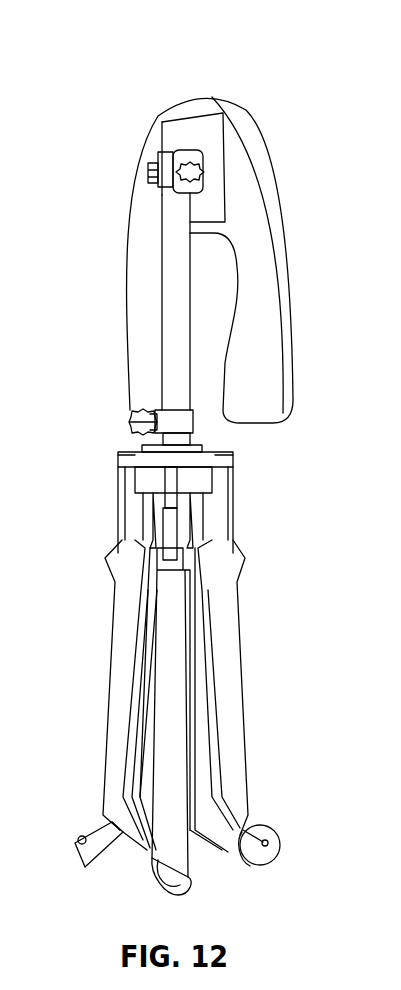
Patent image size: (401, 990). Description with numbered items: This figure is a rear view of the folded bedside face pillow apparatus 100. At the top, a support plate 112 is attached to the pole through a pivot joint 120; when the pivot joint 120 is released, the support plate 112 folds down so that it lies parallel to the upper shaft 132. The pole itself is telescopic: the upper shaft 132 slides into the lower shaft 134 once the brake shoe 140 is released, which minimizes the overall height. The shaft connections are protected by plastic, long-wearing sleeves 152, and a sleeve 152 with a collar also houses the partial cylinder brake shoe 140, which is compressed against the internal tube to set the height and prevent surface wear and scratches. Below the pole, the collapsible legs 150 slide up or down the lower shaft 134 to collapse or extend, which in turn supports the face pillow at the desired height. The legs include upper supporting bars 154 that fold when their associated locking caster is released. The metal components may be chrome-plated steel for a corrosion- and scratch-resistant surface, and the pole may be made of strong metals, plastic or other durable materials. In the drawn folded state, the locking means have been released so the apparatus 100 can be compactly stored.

The bedside face pillow apparatus 100 is at (136, 56).
The support plate 112 is at (265, 338).
The pivot joint 120 is at (150, 172).
The upper shaft 132 is at (172, 307).
The lower shaft 134 is at (185, 440).
The brake shoe 140 is at (130, 420).
The collapsible legs 150 is at (258, 684).
The sleeves 152 is at (140, 462).
The upper supporting bars 154 is at (120, 667).